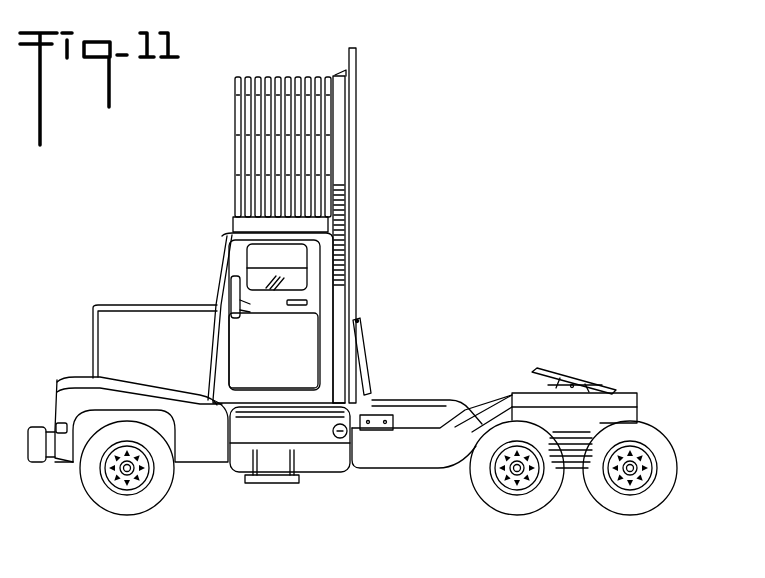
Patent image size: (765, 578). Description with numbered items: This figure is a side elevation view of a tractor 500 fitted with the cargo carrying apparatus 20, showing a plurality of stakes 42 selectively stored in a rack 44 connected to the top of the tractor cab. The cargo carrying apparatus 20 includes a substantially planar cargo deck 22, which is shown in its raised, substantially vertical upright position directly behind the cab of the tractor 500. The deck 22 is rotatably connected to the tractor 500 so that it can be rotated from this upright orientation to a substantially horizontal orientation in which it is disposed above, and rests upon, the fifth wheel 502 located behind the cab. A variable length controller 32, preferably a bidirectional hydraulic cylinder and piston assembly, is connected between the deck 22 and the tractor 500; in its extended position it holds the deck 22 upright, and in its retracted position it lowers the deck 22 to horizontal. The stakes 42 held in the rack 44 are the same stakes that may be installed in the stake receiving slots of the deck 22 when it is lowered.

The cargo carrying apparatus 20 is at (416, 178).
The cargo deck 22 is at (357, 269).
The variable length controller 32 is at (369, 376).
The stakes 42 is at (262, 77).
The rack 44 is at (233, 226).
The tractor 500 is at (277, 219).
The fifth wheel 502 is at (578, 388).